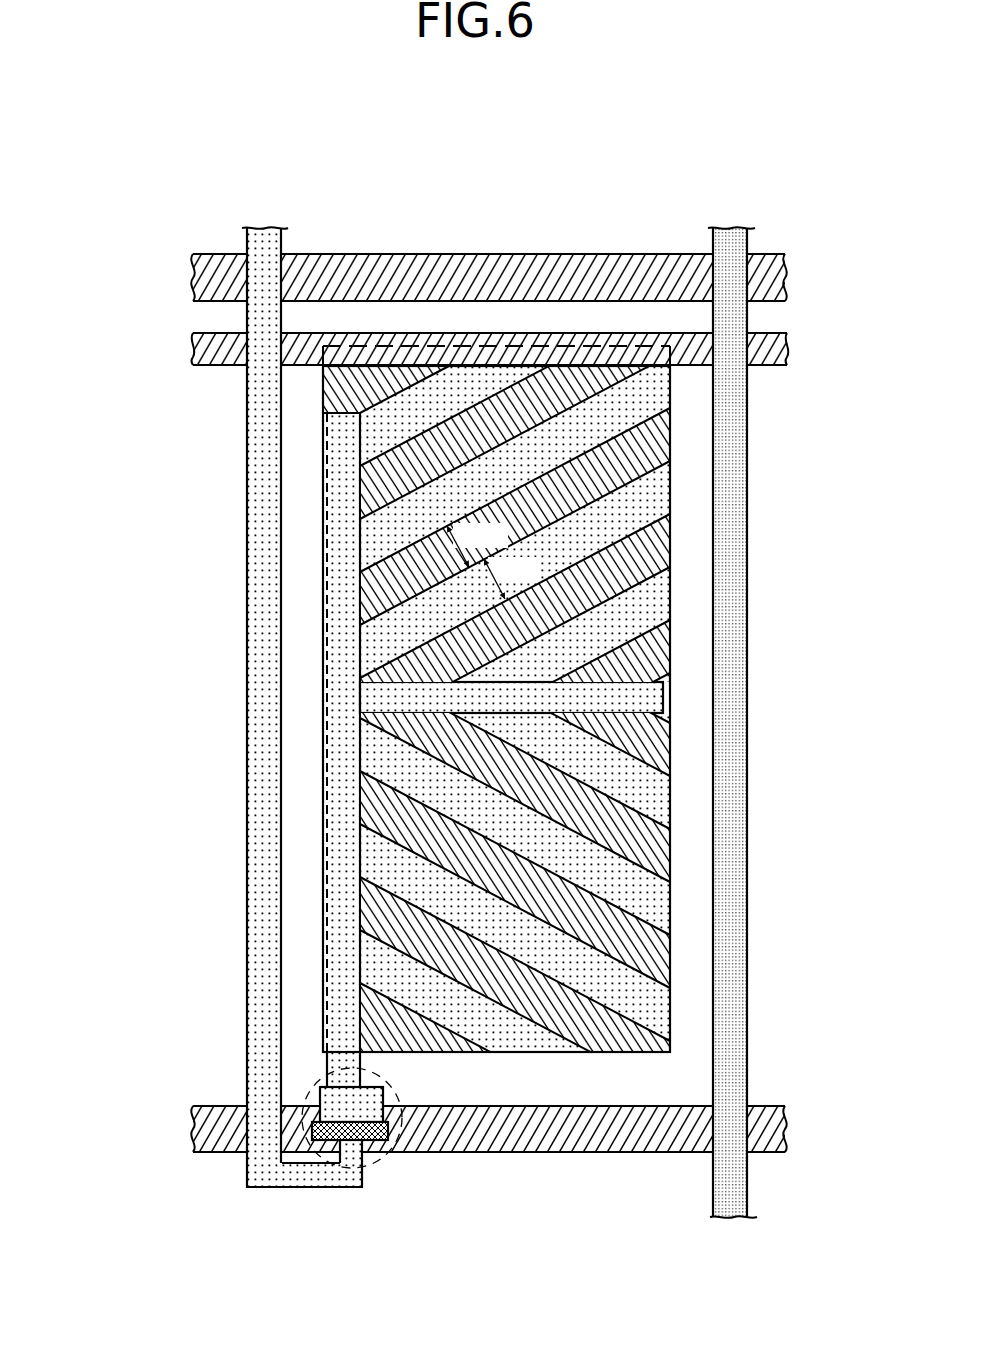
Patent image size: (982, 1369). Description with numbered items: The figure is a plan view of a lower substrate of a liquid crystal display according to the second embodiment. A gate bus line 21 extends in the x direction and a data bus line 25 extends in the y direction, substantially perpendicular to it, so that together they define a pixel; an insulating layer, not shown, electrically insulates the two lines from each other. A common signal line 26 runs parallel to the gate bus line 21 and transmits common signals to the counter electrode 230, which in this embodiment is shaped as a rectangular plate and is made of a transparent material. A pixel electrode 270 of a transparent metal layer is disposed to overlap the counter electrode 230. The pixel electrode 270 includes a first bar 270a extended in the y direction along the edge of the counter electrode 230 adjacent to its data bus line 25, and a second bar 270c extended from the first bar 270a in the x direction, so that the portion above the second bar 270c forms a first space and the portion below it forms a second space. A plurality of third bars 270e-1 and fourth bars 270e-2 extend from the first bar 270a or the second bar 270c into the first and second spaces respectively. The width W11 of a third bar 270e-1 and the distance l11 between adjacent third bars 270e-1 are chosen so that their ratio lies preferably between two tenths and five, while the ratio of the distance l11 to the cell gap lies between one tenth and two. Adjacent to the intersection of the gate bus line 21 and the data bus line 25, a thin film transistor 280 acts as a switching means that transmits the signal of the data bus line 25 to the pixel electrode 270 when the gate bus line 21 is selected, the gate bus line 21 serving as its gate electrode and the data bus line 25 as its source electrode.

The gate bus line 21 is at (773, 277).
The data bus line 25 is at (268, 228).
The common signal line 26 is at (767, 348).
The counter electrode 230 is at (668, 655).
The pixel electrode 270 is at (351, 726).
The first bar 270a is at (342, 618).
The second bar 270c is at (372, 697).
The third bars 270e-1 is at (370, 535).
The fourth bars 270e-2 is at (375, 752).
The thin film transistor 280 is at (385, 1160).
The distance between adjacent third bars l11 is at (477, 544).
The width of the third bar W11 is at (511, 576).